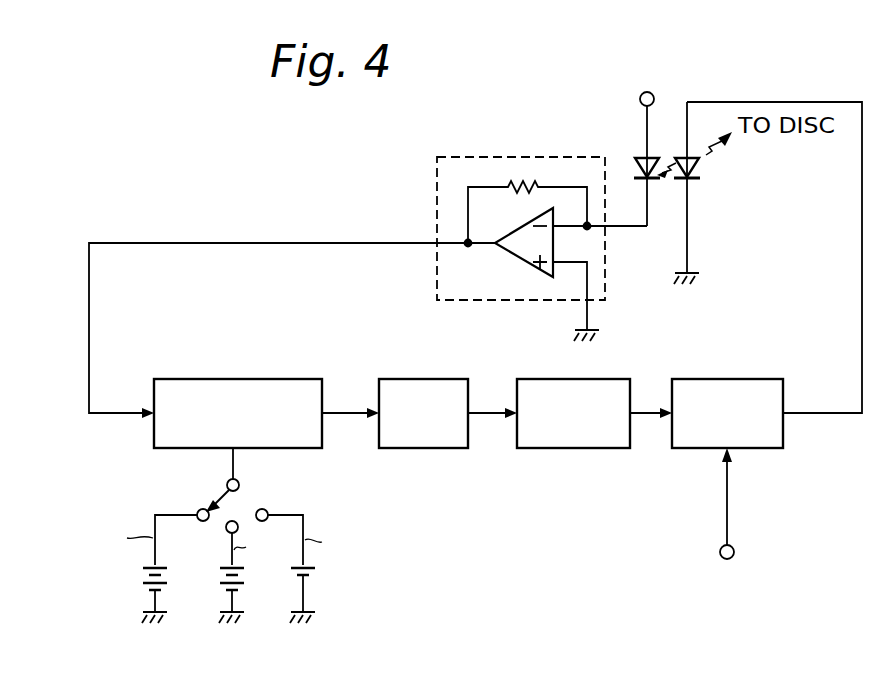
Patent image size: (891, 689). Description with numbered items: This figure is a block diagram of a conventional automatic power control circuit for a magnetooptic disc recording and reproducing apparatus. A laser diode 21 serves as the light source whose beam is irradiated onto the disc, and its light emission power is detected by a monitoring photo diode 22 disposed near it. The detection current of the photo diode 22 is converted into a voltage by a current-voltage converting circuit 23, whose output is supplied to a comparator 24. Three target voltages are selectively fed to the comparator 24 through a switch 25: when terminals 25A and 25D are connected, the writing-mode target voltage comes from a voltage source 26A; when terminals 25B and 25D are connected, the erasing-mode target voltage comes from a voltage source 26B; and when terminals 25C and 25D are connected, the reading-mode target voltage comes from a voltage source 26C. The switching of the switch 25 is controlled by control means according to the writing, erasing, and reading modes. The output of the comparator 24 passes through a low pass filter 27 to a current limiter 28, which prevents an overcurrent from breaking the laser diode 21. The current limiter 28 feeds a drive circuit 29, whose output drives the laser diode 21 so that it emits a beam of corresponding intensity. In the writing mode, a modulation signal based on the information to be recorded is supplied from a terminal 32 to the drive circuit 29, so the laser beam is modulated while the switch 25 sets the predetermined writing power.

The laser diode 21 is at (700, 172).
The monitoring photo diode 22 is at (640, 160).
The current-voltage converting circuit 23 is at (524, 157).
The comparator 24 is at (243, 378).
The switch 25 is at (222, 497).
The terminal 25A is at (197, 512).
The terminal 25B is at (226, 527).
The terminal 25C is at (268, 507).
The terminal 25D is at (242, 474).
The voltage source 26A is at (143, 580).
The voltage source 26B is at (218, 575).
The voltage source 26C is at (315, 575).
The low pass filter 27 is at (412, 378).
The current limiter 28 is at (605, 378).
The drive circuit 29 is at (722, 378).
The terminal 32 is at (728, 560).